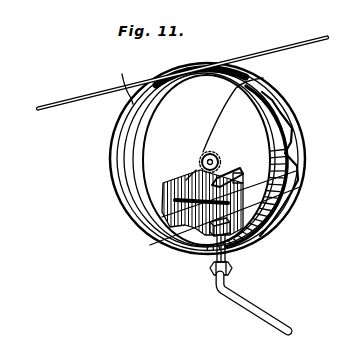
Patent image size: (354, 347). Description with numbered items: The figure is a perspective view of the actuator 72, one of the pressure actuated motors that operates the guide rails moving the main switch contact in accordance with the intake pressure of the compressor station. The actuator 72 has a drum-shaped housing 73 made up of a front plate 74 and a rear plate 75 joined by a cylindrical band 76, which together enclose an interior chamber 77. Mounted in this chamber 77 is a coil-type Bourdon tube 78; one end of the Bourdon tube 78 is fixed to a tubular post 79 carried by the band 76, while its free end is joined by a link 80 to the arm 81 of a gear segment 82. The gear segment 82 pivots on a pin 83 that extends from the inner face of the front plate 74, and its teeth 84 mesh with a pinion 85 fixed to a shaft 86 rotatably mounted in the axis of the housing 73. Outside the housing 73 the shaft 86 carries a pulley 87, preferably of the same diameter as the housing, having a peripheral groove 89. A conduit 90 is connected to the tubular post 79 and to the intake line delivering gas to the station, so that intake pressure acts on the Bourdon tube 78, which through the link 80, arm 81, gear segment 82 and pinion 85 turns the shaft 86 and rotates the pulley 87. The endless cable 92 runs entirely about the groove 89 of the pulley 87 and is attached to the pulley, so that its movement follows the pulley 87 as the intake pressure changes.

The actuator 72 is at (238, 260).
The drum-shaped housing 73 is at (213, 65).
The front plate 74 is at (130, 232).
The rear plate 75 is at (263, 78).
The cylindrical band 76 is at (130, 165).
The interior chamber 77 is at (298, 200).
The Bourdon tube 78 is at (262, 240).
The tubular post 79 is at (205, 255).
The link 80 is at (170, 241).
The arm 81 is at (296, 171).
The gear segment 82 is at (222, 168).
The pin 83 is at (237, 177).
The teeth 84 is at (185, 173).
The pinion 85 is at (208, 152).
The shaft 86 is at (202, 155).
The pulley 87 is at (119, 126).
The peripheral groove 89 is at (120, 81).
The conduit 90 is at (264, 312).
The endless cable 92 is at (308, 42).